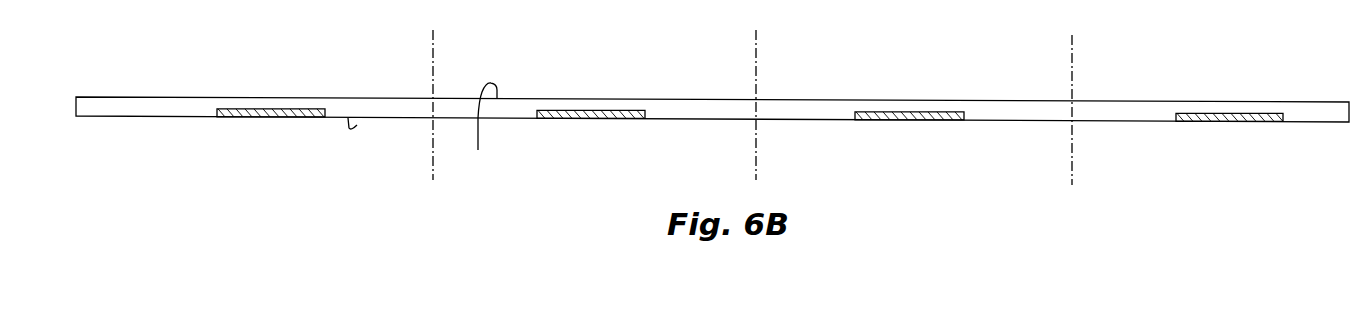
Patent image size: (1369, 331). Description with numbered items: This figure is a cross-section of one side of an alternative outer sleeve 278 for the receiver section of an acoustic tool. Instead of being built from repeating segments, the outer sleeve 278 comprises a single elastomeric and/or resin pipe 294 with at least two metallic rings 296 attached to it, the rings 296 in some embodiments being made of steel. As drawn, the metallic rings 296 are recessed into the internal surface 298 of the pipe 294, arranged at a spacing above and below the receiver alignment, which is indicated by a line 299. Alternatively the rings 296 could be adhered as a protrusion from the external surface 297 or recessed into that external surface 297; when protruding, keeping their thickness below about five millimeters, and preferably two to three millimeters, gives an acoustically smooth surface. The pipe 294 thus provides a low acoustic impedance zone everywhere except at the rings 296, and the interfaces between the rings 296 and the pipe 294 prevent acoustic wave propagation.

The outer sleeve 278 is at (1250, 83).
The pipe 294 is at (1118, 117).
The metallic rings 296 is at (258, 117).
The external surface 297 is at (479, 128).
The internal surface 298 is at (358, 124).
The line 299 is at (431, 148).